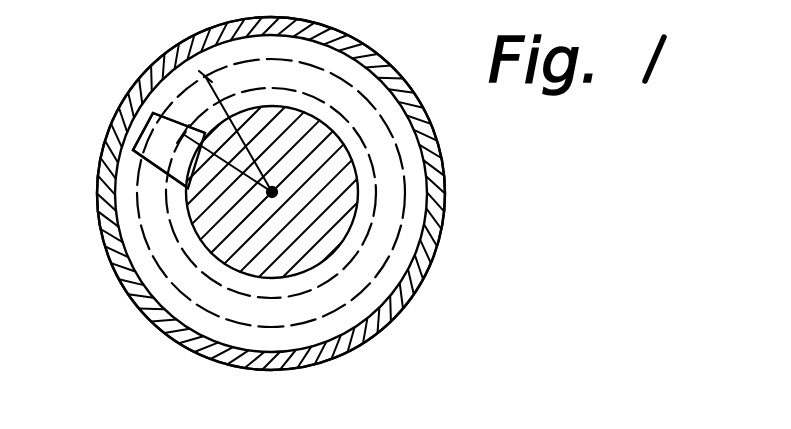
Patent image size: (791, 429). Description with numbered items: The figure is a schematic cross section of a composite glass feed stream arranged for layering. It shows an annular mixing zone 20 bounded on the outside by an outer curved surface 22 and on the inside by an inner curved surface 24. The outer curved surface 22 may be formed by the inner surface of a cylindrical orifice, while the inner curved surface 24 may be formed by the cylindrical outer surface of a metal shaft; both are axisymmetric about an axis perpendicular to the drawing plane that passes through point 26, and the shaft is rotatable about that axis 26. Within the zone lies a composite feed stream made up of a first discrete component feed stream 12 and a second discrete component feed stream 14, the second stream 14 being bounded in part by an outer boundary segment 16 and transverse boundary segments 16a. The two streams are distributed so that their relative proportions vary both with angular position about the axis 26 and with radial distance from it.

The first discrete component feed stream 12 is at (162, 254).
The second discrete component feed stream 14 is at (162, 138).
The outer boundary segment 16 is at (150, 118).
The transverse boundary segments 16a is at (176, 112).
The annular mixing zone 20 is at (362, 282).
The outer curved surface 22 is at (416, 155).
The inner curved surface 24 is at (360, 193).
The axis 26 is at (278, 197).